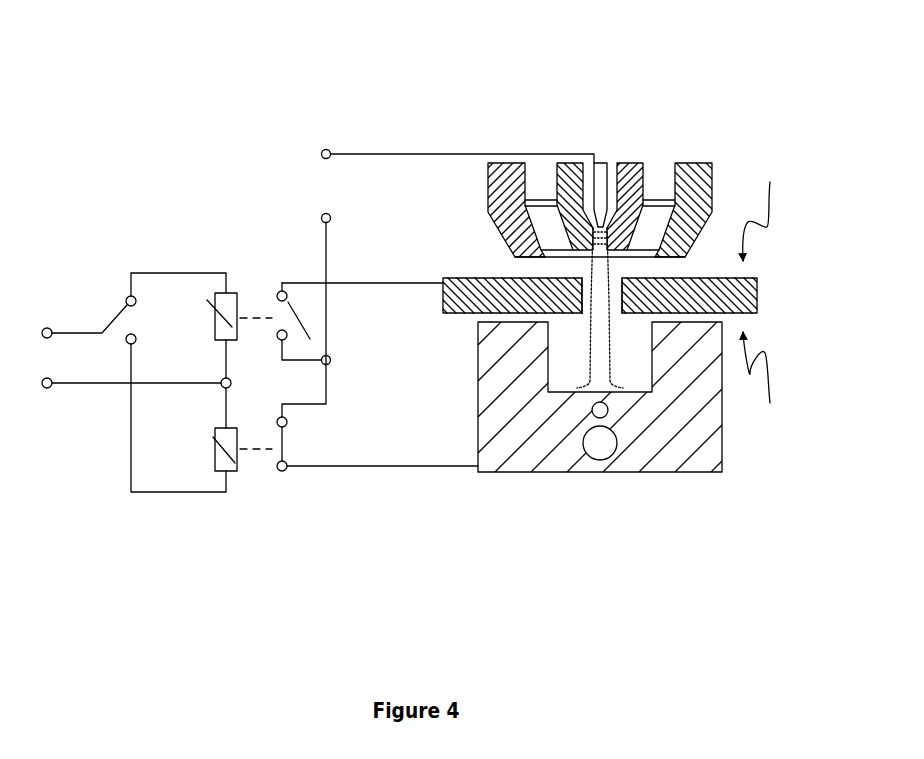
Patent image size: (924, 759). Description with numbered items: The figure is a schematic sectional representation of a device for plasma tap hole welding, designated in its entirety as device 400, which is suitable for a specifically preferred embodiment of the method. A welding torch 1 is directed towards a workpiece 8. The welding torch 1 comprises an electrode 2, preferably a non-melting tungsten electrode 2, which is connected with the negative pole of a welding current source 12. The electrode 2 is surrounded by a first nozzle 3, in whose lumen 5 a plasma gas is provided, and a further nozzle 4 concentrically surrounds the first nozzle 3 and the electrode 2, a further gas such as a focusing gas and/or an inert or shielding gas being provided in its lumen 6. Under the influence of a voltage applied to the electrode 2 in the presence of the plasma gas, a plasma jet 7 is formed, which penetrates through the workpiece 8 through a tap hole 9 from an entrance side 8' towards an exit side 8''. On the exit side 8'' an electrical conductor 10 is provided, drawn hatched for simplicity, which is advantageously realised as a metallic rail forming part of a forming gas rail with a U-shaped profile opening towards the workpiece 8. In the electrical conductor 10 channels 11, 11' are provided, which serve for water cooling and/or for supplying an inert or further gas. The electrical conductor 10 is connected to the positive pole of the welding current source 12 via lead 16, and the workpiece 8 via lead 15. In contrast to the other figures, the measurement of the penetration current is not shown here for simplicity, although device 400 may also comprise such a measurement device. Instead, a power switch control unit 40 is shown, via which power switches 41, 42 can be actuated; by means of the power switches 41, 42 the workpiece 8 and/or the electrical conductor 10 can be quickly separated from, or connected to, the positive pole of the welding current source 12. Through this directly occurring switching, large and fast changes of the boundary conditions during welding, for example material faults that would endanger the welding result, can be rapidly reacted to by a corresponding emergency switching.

The device 400 is at (381, 82).
The welding current source 12 is at (301, 126).
The welding torch 1 is at (457, 210).
The lumen 6 is at (538, 172).
The electrode 2 is at (607, 172).
The lumen 5 is at (615, 172).
The first nozzle 3 is at (643, 173).
The further nozzle 4 is at (711, 176).
The plasma jet 7 is at (603, 337).
The workpiece 8 is at (582, 270).
The tap hole 9 is at (622, 278).
The entrance side 8' is at (761, 209).
The exit side 8'' is at (762, 382).
The electrical conductor 10 is at (533, 472).
The channel 11 is at (600, 470).
The channel 11' is at (626, 463).
The lead 15 is at (425, 285).
The lead 16 is at (462, 468).
The power switch control unit 40 is at (154, 255).
The power switch 41 is at (267, 278).
The power switch 42 is at (265, 462).